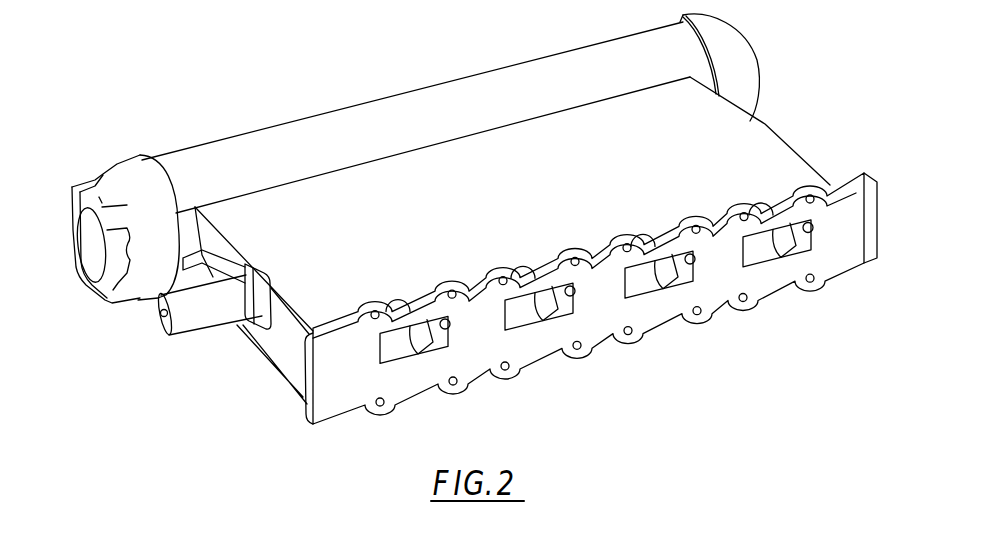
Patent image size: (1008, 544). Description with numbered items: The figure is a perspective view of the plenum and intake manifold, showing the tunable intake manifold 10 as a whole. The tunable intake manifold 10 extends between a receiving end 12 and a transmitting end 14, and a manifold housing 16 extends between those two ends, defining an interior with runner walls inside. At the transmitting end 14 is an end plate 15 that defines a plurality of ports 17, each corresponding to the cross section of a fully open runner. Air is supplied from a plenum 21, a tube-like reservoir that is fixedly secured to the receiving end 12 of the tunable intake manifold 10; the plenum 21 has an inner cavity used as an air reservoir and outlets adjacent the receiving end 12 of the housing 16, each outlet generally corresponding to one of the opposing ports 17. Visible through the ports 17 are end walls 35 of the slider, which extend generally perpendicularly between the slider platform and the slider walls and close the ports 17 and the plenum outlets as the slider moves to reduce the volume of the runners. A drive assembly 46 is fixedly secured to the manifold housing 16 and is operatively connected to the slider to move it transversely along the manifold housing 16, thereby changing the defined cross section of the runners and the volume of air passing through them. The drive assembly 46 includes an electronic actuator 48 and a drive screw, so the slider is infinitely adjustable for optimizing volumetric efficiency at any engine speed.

The tunable intake manifold 10 is at (787, 110).
The receiving end 12 is at (678, 83).
The transmitting end 14 is at (858, 267).
The end plate 15 is at (352, 410).
The manifold housing 16 is at (800, 157).
The ports 17 is at (443, 322).
The plenum 21 is at (597, 44).
The end walls 35 is at (415, 337).
The drive assembly 46 is at (227, 323).
The electronic actuator 48 is at (192, 333).